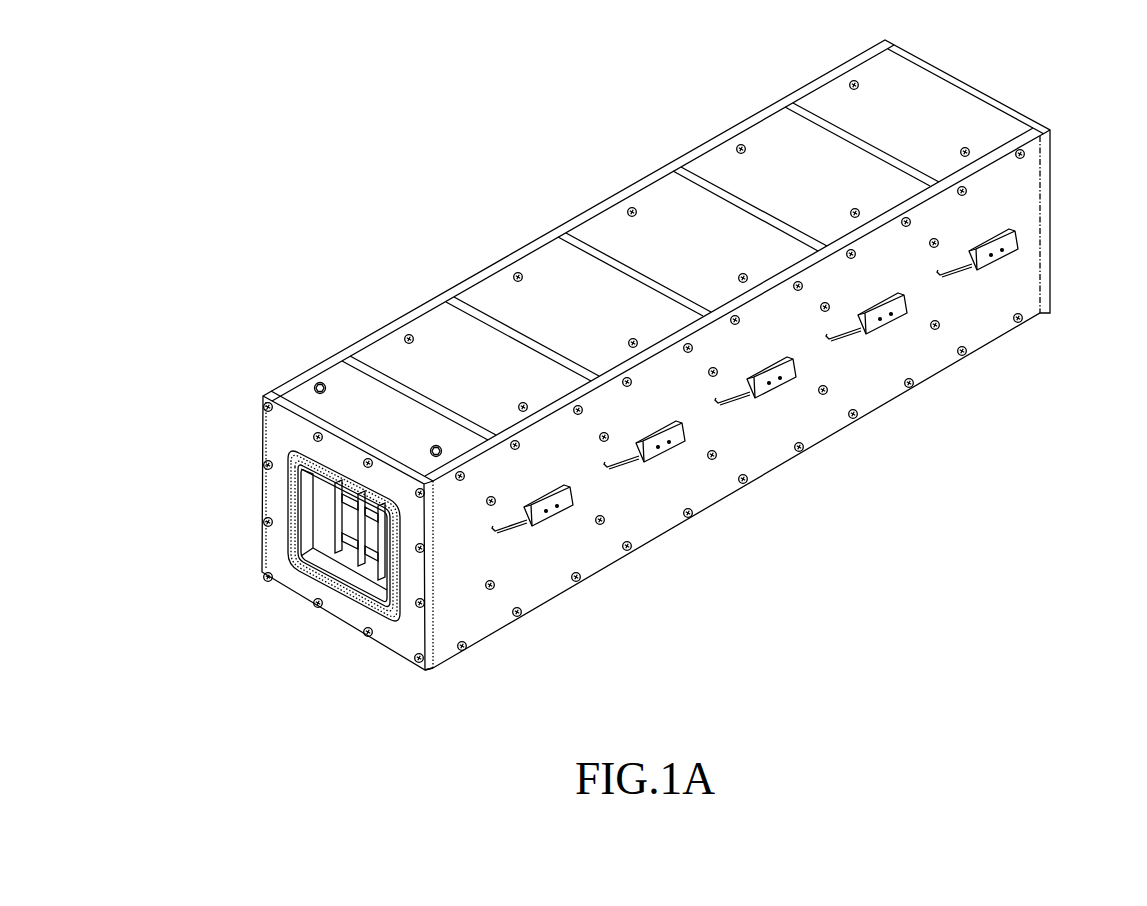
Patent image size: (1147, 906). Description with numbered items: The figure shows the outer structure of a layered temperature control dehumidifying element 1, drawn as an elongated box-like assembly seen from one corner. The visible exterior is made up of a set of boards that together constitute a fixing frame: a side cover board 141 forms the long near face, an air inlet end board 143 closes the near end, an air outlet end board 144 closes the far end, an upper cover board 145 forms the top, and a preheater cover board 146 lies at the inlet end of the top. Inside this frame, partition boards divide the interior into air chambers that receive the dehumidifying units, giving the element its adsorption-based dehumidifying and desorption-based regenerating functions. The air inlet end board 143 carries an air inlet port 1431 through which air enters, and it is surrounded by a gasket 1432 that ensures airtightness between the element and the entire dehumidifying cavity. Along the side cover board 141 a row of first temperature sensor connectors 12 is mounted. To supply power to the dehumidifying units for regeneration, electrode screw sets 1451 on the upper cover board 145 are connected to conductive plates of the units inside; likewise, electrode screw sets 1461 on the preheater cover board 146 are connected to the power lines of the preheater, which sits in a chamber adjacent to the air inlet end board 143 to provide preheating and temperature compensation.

The layered temperature control dehumidifying element 1 is at (274, 165).
The first temperature sensor connector 12 is at (1018, 236).
The side cover board 141 is at (1022, 282).
The air inlet end board 143 is at (268, 498).
The air inlet port 1431 is at (318, 492).
The gasket 1432 is at (287, 543).
The air outlet end board 144 is at (970, 83).
The upper cover board 145 is at (790, 118).
The electrode screw set 1451 is at (848, 80).
The preheater cover board 146 is at (302, 396).
The electrode screw set 1461 is at (316, 383).